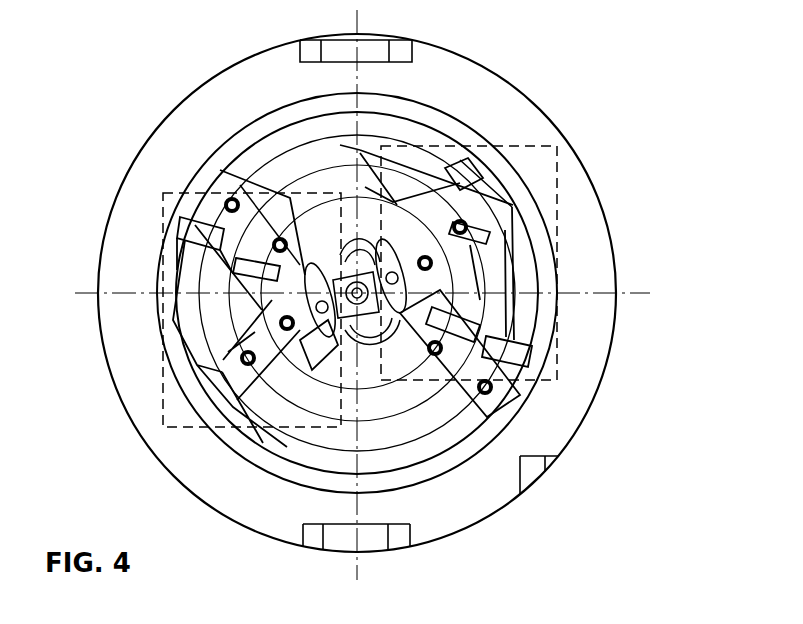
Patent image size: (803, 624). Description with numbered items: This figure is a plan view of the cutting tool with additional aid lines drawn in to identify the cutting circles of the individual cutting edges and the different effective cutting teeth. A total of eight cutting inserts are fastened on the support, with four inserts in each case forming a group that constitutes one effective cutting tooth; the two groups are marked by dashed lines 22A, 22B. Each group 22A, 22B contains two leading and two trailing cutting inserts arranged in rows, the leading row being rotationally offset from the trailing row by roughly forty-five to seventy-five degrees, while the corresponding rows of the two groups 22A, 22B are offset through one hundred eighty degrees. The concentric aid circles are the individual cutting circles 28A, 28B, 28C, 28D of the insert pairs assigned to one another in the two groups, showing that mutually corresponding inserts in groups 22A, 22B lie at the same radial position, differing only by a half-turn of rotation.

The group of cutting inserts 22A is at (158, 273).
The group of cutting inserts 22B is at (498, 382).
The cutting circle 28A is at (392, 200).
The cutting circle 28B is at (482, 276).
The cutting circle 28C is at (290, 422).
The cutting circle 28D is at (533, 328).